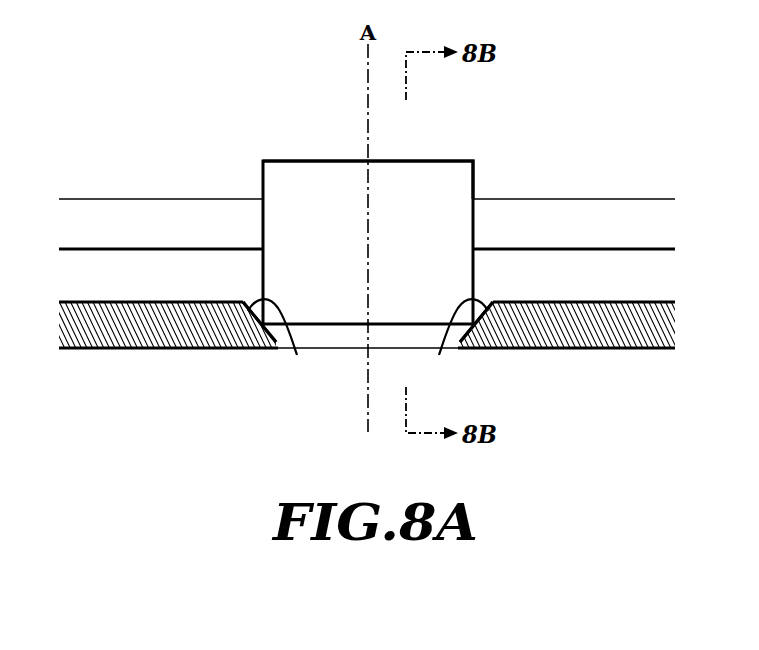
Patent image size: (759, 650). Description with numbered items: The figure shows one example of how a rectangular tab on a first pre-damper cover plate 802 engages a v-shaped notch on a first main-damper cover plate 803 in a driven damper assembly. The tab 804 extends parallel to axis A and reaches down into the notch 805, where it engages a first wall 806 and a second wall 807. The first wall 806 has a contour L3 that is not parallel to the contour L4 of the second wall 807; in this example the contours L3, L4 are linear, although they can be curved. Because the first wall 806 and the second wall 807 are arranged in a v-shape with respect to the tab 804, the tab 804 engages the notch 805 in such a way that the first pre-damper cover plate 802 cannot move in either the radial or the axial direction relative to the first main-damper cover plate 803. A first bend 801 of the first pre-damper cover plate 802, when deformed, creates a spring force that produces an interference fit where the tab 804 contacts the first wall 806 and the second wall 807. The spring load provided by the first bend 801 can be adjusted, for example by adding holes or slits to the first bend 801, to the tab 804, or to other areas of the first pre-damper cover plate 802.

The first bend 801 is at (440, 163).
The first pre-damper cover plate 802 is at (591, 219).
The first main-damper cover plate 803 is at (607, 306).
The tab 804 is at (336, 253).
The notch 805 is at (359, 334).
The first wall 806 is at (297, 355).
The second wall 807 is at (439, 355).
The contour of first wall L3 is at (288, 358).
The contour of second wall L4 is at (452, 358).